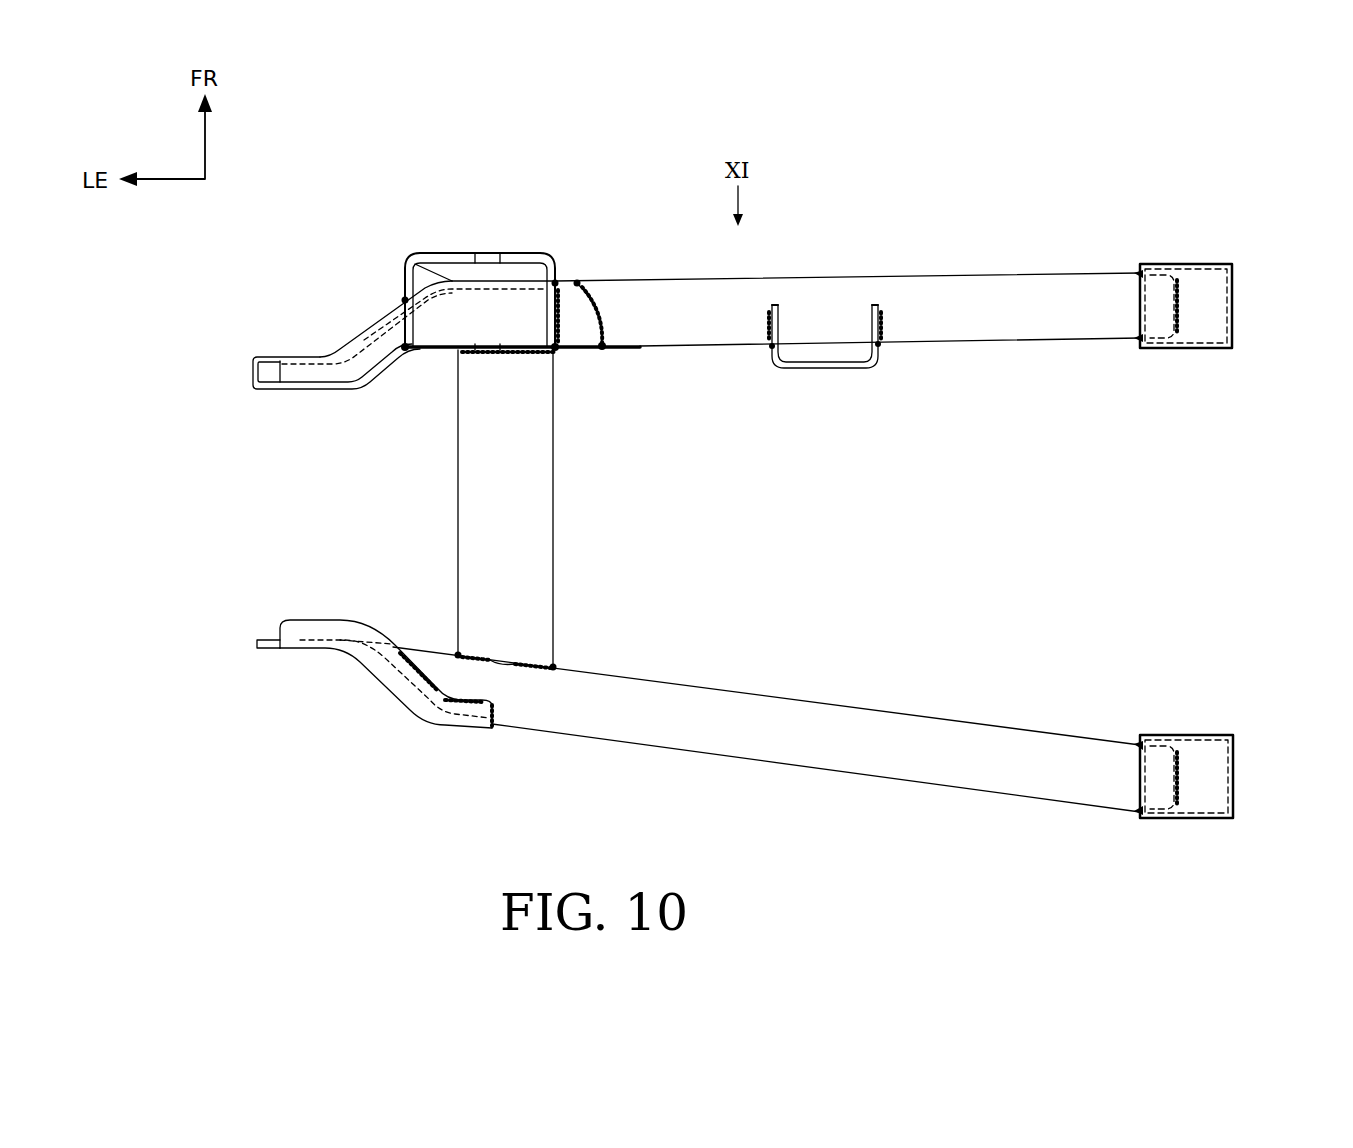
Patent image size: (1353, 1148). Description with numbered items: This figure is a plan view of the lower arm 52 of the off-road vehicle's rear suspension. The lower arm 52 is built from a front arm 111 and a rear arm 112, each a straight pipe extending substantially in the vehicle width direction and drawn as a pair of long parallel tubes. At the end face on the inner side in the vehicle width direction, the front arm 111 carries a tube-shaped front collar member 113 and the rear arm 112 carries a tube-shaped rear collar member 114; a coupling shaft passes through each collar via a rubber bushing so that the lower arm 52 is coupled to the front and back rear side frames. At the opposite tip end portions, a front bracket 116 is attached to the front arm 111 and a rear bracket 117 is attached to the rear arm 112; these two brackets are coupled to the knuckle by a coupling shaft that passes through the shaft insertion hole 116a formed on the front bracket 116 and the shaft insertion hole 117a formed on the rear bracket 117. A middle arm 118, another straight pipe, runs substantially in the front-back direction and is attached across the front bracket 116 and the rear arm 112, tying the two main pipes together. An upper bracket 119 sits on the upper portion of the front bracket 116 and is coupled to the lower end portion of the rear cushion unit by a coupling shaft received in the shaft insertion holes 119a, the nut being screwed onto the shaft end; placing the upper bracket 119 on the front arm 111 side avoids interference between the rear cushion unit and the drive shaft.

The lower arm 52 is at (336, 287).
The front arm 111 is at (830, 292).
The rear arm 112 is at (823, 755).
The front collar member 113 is at (1234, 302).
The rear collar member 114 is at (1236, 780).
The front bracket 116 is at (396, 302).
The shaft insertion hole 116a is at (295, 356).
The rear bracket 117 is at (403, 682).
The shaft insertion hole 117a is at (290, 652).
The middle arm 118 is at (460, 494).
The upper bracket 119 is at (512, 252).
The shaft insertion hole 119a is at (480, 250).